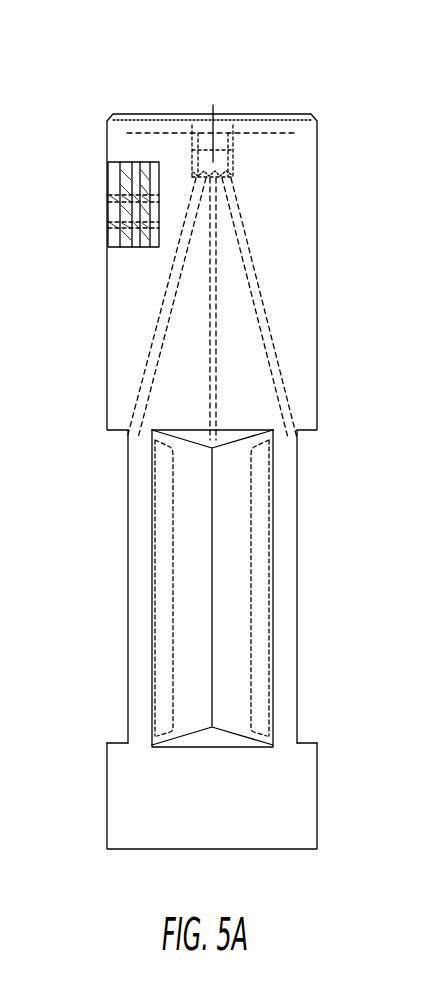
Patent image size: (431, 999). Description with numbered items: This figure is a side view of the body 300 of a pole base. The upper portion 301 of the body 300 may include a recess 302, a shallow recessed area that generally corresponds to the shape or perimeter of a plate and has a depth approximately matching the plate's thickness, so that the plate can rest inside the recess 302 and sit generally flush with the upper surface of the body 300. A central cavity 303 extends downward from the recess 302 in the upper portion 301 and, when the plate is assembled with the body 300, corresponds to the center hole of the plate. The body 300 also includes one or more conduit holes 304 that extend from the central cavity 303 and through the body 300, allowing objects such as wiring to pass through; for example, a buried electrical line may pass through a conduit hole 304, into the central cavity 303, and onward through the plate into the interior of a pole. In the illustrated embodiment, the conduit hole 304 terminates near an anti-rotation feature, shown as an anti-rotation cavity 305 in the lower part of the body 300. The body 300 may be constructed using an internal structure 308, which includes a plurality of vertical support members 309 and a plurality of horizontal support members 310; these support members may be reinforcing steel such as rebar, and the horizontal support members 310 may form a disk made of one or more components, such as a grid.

The body 300 is at (312, 78).
The upper portion 301 is at (298, 158).
The recess 302 is at (283, 132).
The central cavity 303 is at (205, 147).
The conduit holes 304 is at (215, 315).
The anti-rotation cavity 305 is at (233, 650).
The internal structure 308 is at (82, 237).
The vertical support members 309 is at (118, 173).
The horizontal support members 310 is at (110, 198).